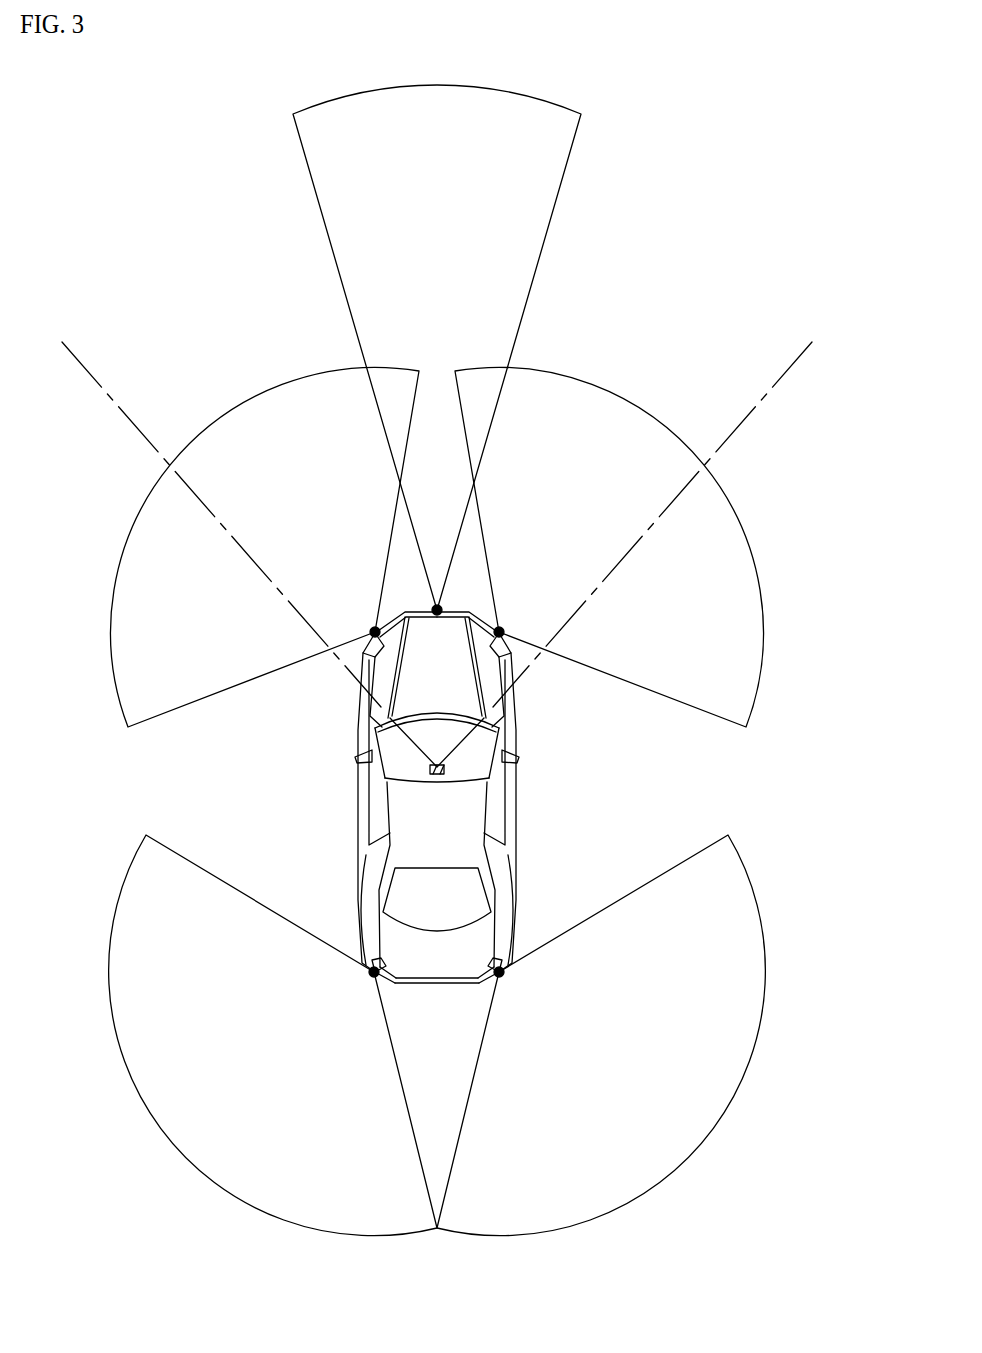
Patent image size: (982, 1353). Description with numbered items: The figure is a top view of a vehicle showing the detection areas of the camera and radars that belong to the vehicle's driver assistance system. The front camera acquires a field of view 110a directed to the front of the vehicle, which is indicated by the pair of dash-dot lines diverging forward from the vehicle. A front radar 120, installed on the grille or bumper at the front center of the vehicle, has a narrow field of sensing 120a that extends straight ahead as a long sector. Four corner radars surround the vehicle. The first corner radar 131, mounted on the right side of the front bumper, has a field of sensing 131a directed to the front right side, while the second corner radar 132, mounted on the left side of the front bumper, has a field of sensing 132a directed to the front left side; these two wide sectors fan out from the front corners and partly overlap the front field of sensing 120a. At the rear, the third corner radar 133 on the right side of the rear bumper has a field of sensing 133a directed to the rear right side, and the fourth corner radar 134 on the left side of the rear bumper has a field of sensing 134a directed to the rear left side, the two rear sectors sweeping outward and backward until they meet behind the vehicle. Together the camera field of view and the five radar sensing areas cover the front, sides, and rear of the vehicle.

The field of view 110a is at (762, 392).
The front radar 120 is at (437, 610).
The field of sensing 120a is at (527, 228).
The first corner radar 131 is at (499, 632).
The field of sensing 131a is at (638, 422).
The second corner radar 132 is at (375, 632).
The field of sensing 132a is at (236, 422).
The third corner radar 133 is at (499, 972).
The field of sensing 133a is at (714, 1113).
The fourth corner radar 134 is at (374, 972).
The field of sensing 134a is at (160, 1113).